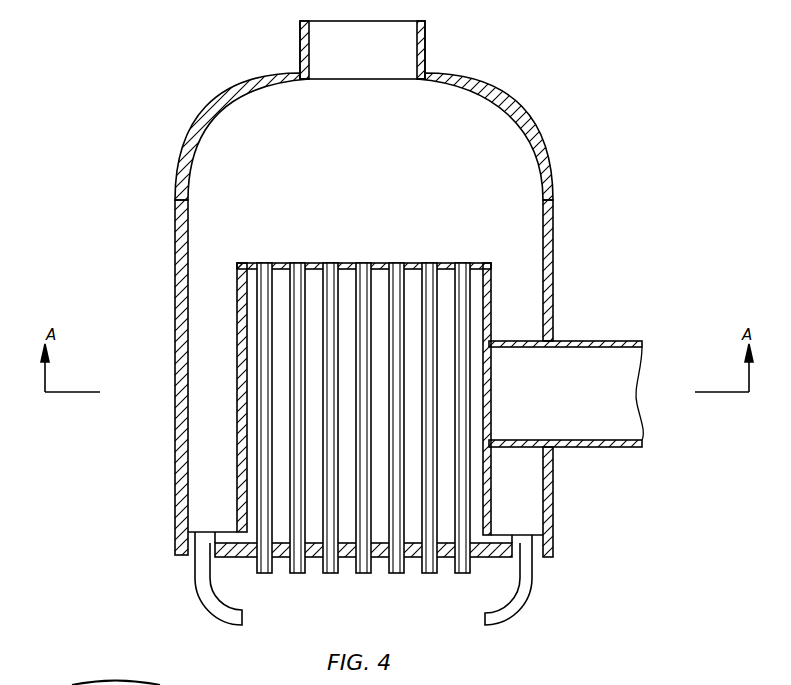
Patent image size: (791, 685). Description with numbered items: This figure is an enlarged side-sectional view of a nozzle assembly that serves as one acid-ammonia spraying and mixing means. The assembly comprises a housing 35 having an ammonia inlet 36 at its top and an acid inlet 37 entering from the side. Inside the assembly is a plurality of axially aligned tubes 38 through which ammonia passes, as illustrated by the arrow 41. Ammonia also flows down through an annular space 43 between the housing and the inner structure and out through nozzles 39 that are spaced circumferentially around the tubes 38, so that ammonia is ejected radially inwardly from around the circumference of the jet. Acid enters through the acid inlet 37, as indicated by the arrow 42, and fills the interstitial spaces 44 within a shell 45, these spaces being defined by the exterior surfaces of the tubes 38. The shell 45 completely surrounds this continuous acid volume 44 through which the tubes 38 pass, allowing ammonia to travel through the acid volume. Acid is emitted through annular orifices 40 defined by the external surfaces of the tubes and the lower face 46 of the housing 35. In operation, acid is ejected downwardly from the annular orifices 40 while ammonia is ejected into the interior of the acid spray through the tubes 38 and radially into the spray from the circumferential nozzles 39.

The housing 35 is at (537, 132).
The ammonia inlet 36 is at (427, 40).
The acid inlet 37 is at (608, 340).
The tubes 38 is at (427, 575).
The nozzles 39 is at (197, 592).
The annular orifices 40 is at (287, 558).
The arrow 41 is at (218, 280).
The arrow 42 is at (480, 428).
The annular space 43 is at (207, 316).
The interstitial spaces 44 is at (445, 285).
The shell 45 is at (493, 283).
The lower face 46 is at (487, 558).